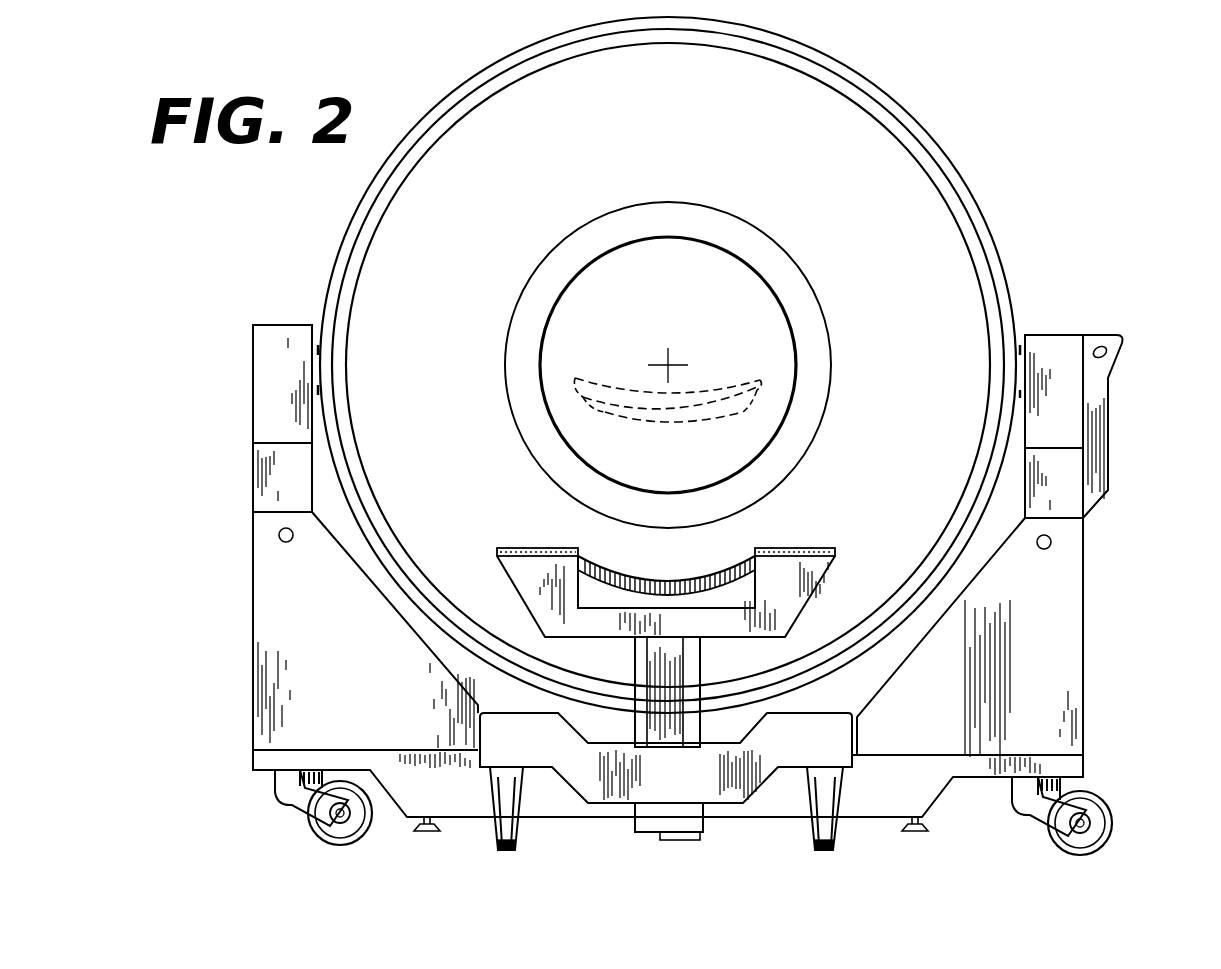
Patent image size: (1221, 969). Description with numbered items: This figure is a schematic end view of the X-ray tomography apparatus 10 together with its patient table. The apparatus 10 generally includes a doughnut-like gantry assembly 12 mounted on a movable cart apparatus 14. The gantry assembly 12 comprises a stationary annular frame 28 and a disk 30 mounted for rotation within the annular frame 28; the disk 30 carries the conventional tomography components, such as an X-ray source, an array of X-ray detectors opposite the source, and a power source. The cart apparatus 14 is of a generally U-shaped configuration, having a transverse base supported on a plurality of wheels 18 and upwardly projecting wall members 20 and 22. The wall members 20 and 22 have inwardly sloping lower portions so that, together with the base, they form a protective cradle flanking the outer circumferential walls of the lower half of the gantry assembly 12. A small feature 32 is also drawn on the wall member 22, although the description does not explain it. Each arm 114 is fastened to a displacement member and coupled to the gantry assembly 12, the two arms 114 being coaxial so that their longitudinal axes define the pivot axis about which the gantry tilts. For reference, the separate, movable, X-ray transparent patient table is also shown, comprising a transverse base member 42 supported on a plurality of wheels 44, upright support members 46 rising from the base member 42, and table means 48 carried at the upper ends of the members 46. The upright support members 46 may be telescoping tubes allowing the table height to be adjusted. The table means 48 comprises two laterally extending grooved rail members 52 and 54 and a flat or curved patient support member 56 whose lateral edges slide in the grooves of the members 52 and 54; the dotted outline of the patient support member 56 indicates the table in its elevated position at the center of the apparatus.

The X-ray tomography apparatus 10 is at (888, 42).
The gantry assembly 12 is at (912, 108).
The cart apparatus 14 is at (1124, 513).
The wheels 18 is at (309, 827).
The wall member 20 is at (1084, 600).
The wall member 22 is at (250, 598).
The annular frame 28 is at (974, 196).
The disk 30 is at (796, 40).
The pivot hole 32 is at (278, 535).
The transverse base member 42 is at (588, 795).
The wheels 44 is at (496, 838).
The upright support members 46 is at (701, 667).
The table means 48 is at (827, 605).
The grooved rail member 52 is at (808, 550).
The grooved rail member 54 is at (525, 548).
The patient support member 56 is at (700, 393).
The arm 114 is at (317, 332).